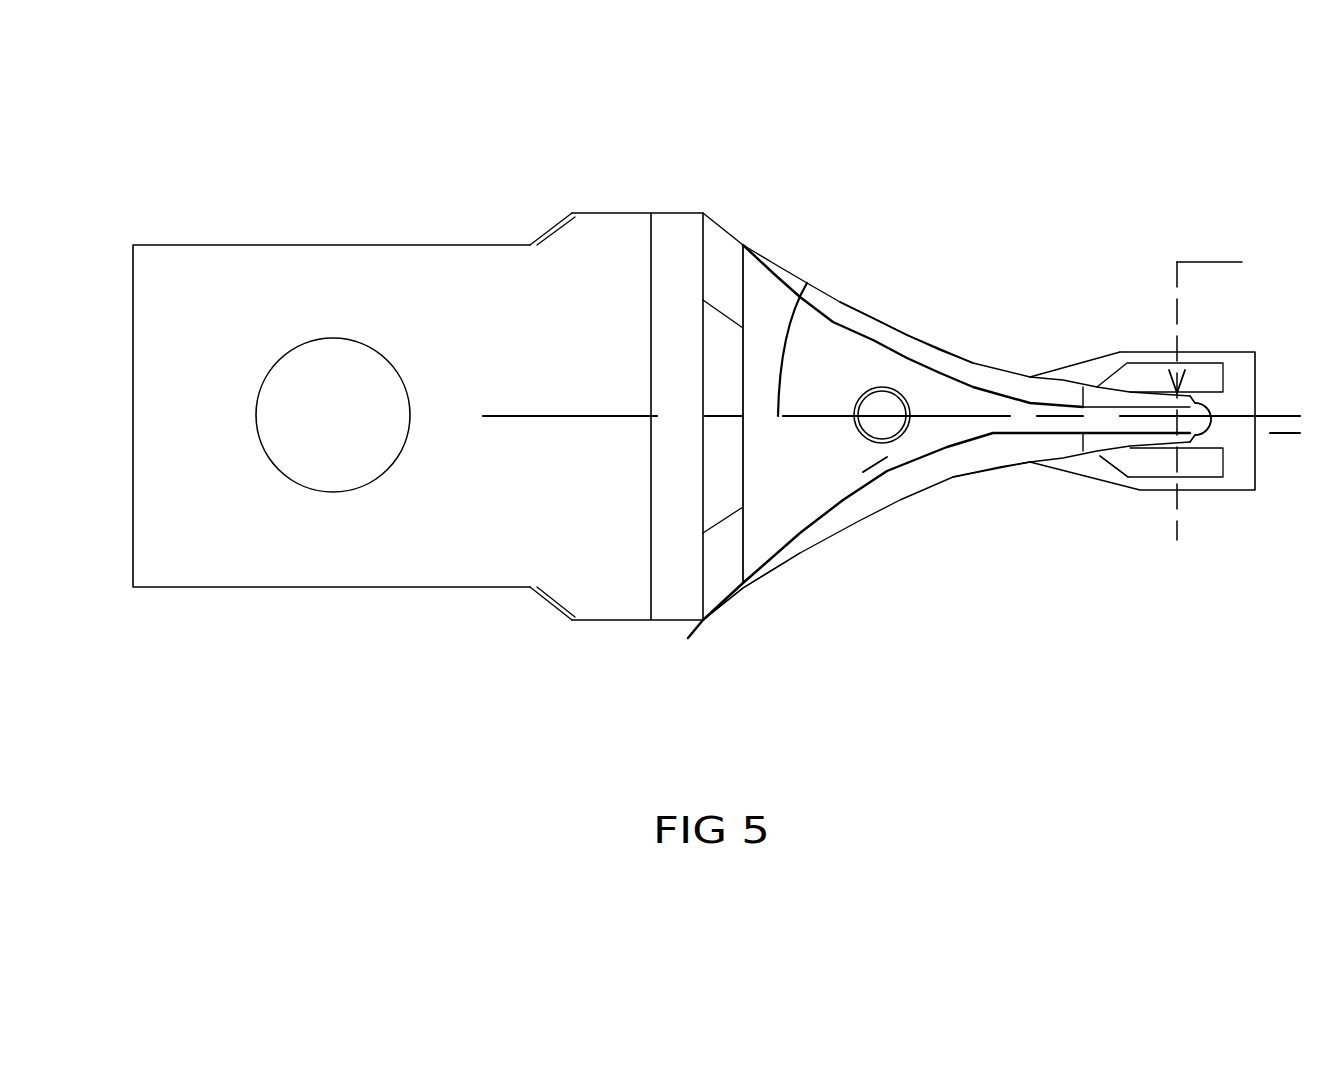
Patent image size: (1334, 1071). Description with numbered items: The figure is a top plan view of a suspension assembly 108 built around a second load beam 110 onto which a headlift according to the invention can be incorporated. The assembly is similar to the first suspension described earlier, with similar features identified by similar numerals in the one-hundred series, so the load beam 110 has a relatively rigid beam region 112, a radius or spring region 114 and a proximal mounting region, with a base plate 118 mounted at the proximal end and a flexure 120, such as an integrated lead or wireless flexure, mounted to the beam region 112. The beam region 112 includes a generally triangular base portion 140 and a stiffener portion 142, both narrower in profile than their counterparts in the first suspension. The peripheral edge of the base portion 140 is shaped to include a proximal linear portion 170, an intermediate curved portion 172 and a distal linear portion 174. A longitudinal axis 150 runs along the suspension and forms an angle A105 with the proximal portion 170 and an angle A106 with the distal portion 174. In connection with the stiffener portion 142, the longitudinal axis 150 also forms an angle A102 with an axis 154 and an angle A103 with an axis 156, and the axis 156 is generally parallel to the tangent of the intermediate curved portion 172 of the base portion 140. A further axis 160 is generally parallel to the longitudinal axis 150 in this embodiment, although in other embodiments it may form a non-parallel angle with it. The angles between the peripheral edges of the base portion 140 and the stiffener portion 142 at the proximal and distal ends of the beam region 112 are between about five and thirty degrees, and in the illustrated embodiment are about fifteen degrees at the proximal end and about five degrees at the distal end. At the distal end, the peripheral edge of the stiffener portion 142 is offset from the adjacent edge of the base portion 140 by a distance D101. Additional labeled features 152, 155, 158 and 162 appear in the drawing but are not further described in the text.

The suspension assembly 108 is at (462, 588).
The base plate 118 is at (222, 288).
The longitudinal axis 150 is at (535, 417).
The radius or spring region 114 is at (723, 350).
The second load beam 110 is at (1063, 270).
The beam region 112 is at (1002, 370).
The proximal linear portion 170 is at (837, 297).
The intermediate curved portion 172 is at (957, 357).
The distal linear portion 174 is at (1047, 380).
The seal ring 162 is at (884, 387).
The stiffener portion 142 is at (767, 452).
The inlet passage 152 is at (808, 460).
The axis 154 is at (700, 627).
The inner wall surface 155 is at (957, 445).
The axis 156 is at (1012, 464).
The angle A106 is at (1102, 447).
The base portion 140 is at (1147, 437).
The outlet 158 is at (1177, 425).
The distance D101 is at (1238, 395).
The flexure 120 is at (1213, 352).
The axis 160 is at (1272, 433).
The angle A105 is at (783, 337).
The angle A103 is at (806, 418).
The angle A102 is at (835, 420).